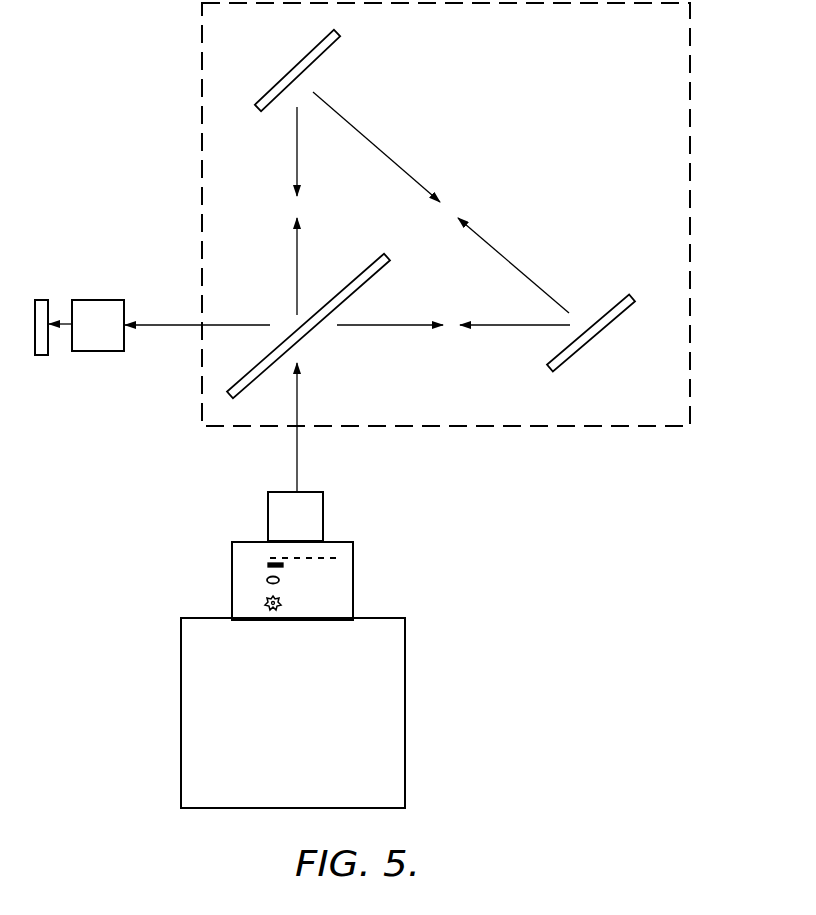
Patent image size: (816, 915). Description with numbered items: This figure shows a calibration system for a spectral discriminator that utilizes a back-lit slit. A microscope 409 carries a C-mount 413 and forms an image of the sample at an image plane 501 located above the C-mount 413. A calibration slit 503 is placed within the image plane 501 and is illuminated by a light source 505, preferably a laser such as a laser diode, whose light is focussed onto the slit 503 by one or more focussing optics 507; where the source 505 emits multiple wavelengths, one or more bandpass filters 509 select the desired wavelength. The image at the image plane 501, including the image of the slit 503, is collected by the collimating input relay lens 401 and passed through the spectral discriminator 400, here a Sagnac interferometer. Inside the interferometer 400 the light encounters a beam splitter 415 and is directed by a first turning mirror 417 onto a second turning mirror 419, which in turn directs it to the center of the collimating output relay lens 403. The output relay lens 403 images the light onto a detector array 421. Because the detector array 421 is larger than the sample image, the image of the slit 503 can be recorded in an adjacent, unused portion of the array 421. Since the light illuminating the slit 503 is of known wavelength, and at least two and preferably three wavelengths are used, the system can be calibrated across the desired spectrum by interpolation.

The Sagnac interferometer 400 is at (700, 78).
The collimating input relay lens 401 is at (324, 514).
The collimating output relay lens 403 is at (104, 300).
The microscope 409 is at (406, 654).
The C-mount 413 is at (354, 596).
The beam splitter 415 is at (386, 259).
The turning mirror 417 is at (336, 40).
The turning mirror 419 is at (629, 299).
The detector array 421 is at (41, 300).
The image plane 501 is at (340, 558).
The calibration slit 503 is at (272, 558).
The light source 505 is at (266, 602).
The focussing optics 507 is at (267, 580).
The bandpass filter 509 is at (268, 565).